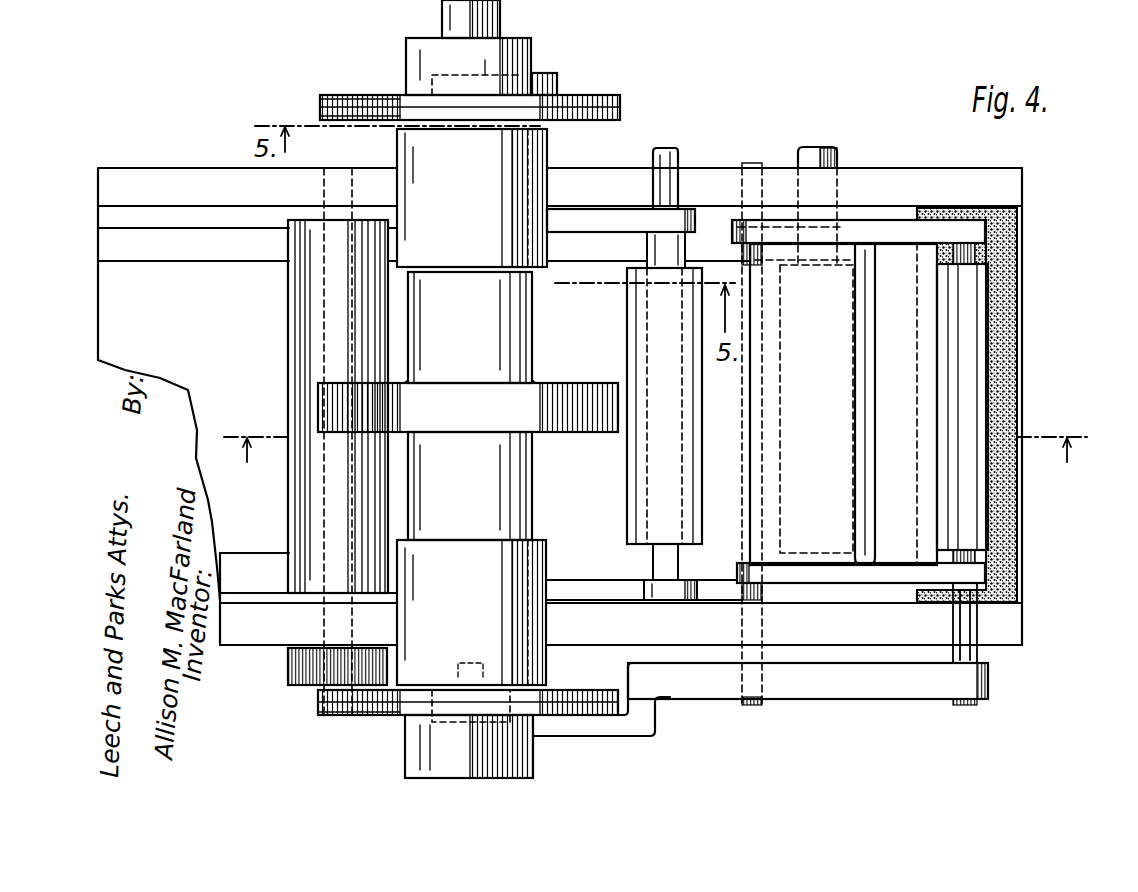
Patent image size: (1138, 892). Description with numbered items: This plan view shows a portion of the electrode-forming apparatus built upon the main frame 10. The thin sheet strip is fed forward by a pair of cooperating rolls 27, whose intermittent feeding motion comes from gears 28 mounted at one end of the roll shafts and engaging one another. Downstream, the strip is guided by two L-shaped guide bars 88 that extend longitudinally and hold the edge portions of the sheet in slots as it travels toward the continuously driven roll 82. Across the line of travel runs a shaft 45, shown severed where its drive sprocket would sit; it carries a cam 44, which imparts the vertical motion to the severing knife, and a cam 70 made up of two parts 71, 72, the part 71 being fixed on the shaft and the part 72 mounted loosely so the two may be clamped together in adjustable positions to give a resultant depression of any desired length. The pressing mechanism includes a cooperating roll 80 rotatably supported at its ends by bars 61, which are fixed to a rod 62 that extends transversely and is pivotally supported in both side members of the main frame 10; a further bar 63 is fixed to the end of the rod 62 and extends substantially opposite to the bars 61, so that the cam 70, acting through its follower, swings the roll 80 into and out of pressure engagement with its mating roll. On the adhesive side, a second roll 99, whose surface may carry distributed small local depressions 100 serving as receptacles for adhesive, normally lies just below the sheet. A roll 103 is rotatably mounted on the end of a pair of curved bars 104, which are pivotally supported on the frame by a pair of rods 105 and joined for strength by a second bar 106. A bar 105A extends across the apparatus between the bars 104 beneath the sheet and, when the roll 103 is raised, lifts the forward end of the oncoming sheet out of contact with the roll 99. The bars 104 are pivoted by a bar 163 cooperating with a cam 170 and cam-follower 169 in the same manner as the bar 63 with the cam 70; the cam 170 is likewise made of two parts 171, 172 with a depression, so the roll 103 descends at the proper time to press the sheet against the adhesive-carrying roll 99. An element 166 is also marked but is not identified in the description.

The main frame 10 is at (590, 168).
The cooperating rolls 27 is at (300, 505).
The gears 28 is at (300, 667).
The cam 44 is at (574, 396).
The shaft 45 is at (445, 18).
The bars 61 is at (607, 203).
The rod 62 is at (556, 80).
The bar 63 is at (512, 76).
The cam 70 is at (304, 106).
The cam part 71 is at (352, 118).
The cam part 72 is at (331, 99).
The cooperating roll 80 is at (628, 320).
The roll 82 is at (780, 406).
The L-shaped guide bars 88 is at (196, 252).
The second roll 99 is at (1017, 500).
The small local depressions 100 is at (1017, 536).
The roll 103 is at (985, 319).
The curved bars 104 is at (1020, 229).
The rods 105 is at (755, 165).
The bar 105A is at (880, 413).
The second bar 106 is at (756, 437).
The bar 163 is at (990, 686).
The key 166 is at (430, 702).
The cam-follower 169 is at (512, 724).
The cam 170 is at (619, 719).
The cam part 171 is at (322, 698).
The cam part 172 is at (365, 710).